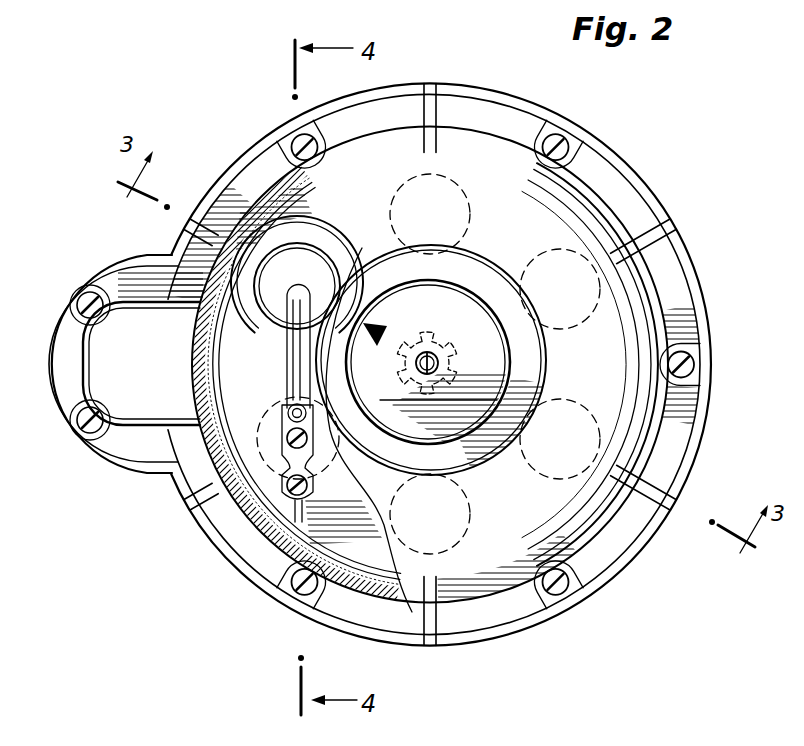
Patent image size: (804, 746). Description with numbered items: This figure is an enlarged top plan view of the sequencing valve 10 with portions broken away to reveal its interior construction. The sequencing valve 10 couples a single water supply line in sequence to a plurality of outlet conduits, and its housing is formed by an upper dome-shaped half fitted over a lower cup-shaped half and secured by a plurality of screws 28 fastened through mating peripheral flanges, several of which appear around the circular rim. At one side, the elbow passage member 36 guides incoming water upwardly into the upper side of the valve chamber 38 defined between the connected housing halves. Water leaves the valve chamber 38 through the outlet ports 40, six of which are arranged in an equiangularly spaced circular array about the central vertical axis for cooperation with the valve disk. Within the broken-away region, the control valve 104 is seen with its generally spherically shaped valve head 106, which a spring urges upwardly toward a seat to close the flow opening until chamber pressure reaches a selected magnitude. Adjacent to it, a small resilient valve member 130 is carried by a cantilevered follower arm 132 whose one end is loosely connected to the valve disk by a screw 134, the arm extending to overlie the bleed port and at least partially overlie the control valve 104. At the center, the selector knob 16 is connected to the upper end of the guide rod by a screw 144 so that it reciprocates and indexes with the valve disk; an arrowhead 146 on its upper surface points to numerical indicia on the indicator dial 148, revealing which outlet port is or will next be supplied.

The sequencing valve 10 is at (183, 585).
The selector knob 16 is at (446, 298).
The screws 28 is at (575, 147).
The elbow passage member 36 is at (128, 312).
The valve chamber 38 is at (380, 535).
The outlet ports 40 is at (442, 176).
The control valve 104 is at (307, 243).
The valve head 106 is at (325, 266).
The valve member 130 is at (289, 409).
The follower arm 132 is at (292, 373).
The screw 134 is at (312, 492).
The screw 144 is at (437, 364).
The arrowhead 146 is at (385, 324).
The indicator dial 148 is at (523, 346).